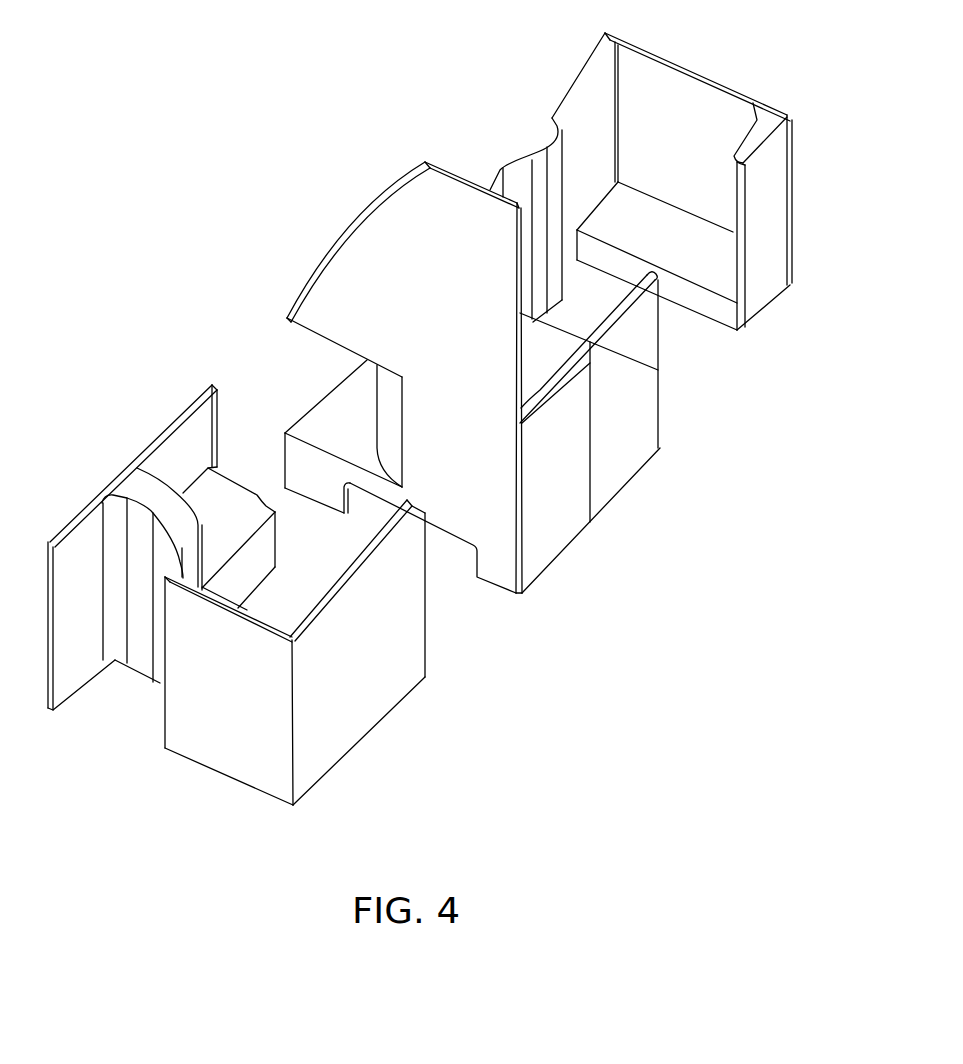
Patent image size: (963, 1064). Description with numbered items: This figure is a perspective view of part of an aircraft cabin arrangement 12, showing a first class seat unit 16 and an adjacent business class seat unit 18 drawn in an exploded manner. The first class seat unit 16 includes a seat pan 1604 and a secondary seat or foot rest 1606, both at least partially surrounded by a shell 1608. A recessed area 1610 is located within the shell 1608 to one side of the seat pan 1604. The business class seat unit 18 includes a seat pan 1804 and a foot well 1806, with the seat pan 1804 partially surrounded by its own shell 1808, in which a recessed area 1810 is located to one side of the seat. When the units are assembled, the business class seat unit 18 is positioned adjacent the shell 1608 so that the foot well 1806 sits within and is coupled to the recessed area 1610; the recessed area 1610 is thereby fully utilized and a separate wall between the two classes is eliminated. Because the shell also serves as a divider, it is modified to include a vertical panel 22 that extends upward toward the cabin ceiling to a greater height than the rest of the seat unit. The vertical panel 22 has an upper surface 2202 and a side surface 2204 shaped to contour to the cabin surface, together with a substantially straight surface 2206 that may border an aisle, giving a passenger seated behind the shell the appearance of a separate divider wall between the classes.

The aircraft cabin arrangement 12 is at (399, 93).
The first class seat unit 16 is at (693, 71).
The business class seat unit 18 is at (53, 543).
The vertical panel 22 is at (382, 288).
The seat pan 1604 is at (545, 323).
The foot rest 1606 is at (668, 253).
The shell 1608 is at (487, 458).
The recessed area 1610 is at (377, 403).
The seat pan 1804 is at (288, 598).
The foot well 1806 is at (320, 430).
The shell 1808 is at (240, 760).
The recessed area 1810 is at (115, 650).
The upper surface 2202 is at (448, 167).
The side surface 2204 is at (357, 232).
The substantially straight surface 2206 is at (507, 355).